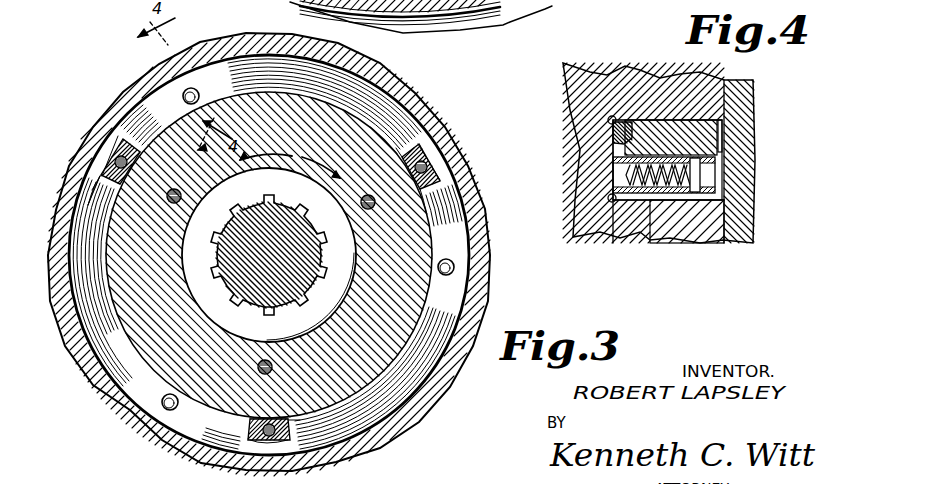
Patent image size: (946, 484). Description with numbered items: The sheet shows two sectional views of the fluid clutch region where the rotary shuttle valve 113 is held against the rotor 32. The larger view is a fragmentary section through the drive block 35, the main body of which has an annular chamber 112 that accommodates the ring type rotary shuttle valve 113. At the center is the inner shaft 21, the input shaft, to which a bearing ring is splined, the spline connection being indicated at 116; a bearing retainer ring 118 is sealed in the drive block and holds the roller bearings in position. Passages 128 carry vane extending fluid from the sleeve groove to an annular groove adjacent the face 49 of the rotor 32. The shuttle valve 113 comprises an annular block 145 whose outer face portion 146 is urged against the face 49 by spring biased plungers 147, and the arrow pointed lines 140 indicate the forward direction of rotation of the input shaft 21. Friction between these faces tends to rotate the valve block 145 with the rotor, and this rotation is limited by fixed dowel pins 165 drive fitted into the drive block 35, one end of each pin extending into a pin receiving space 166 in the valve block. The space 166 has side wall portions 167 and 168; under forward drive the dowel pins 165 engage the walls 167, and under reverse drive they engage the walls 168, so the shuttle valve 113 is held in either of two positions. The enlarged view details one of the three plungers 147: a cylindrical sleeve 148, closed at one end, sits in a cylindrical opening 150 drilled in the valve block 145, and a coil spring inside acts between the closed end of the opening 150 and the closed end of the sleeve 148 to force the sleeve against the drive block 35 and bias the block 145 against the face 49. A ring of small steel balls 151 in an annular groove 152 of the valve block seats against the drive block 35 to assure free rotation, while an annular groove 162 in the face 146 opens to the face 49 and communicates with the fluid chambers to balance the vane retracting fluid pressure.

In FIG. 3, the inner shaft 21 is at (266, 262).
In FIG. 4, the rotor 32 is at (748, 131).
In FIG. 3, the drive block 35 is at (478, 196).
In FIG. 4, the drive block 35 is at (626, 82).
In FIG. 4, the face of the rotor 49 is at (736, 92).
In FIG. 3, the annular chamber 112 is at (288, 88).
In FIG. 4, the annular chamber 112 is at (648, 242).
In FIG. 3, the rotary shuttle valve 113 is at (368, 79).
In FIG. 4, the rotary shuttle valve 113 is at (690, 108).
In FIG. 3, the spline connection 116 is at (248, 311).
In FIG. 3, the bearing retainer ring 118 is at (306, 196).
In FIG. 3, the passages 128 is at (170, 206).
In FIG. 3, the arrow pointed lines 140 is at (296, 152).
In FIG. 3, the annular block 145 is at (446, 296).
In FIG. 4, the annular block 145 is at (710, 149).
In FIG. 4, the outer face portion 146 is at (702, 176).
In FIG. 3, the spring biased plungers 147 is at (197, 88).
In FIG. 4, the spring biased plungers 147 is at (605, 185).
In FIG. 4, the cylindrical sleeve 148 is at (626, 162).
In FIG. 4, the cylindrical opening 150 is at (642, 160).
In FIG. 3, the steel balls 151 is at (128, 386).
In FIG. 4, the steel balls 151 is at (616, 134).
In FIG. 4, the annular groove 152 is at (634, 120).
In FIG. 4, the annular groove 162 is at (724, 128).
In FIG. 3, the dowel pins 165 is at (112, 164).
In FIG. 3, the pin receiving space 166 is at (108, 162).
In FIG. 3, the side wall portion 167 is at (132, 164).
In FIG. 3, the side wall portion 168 is at (112, 196).